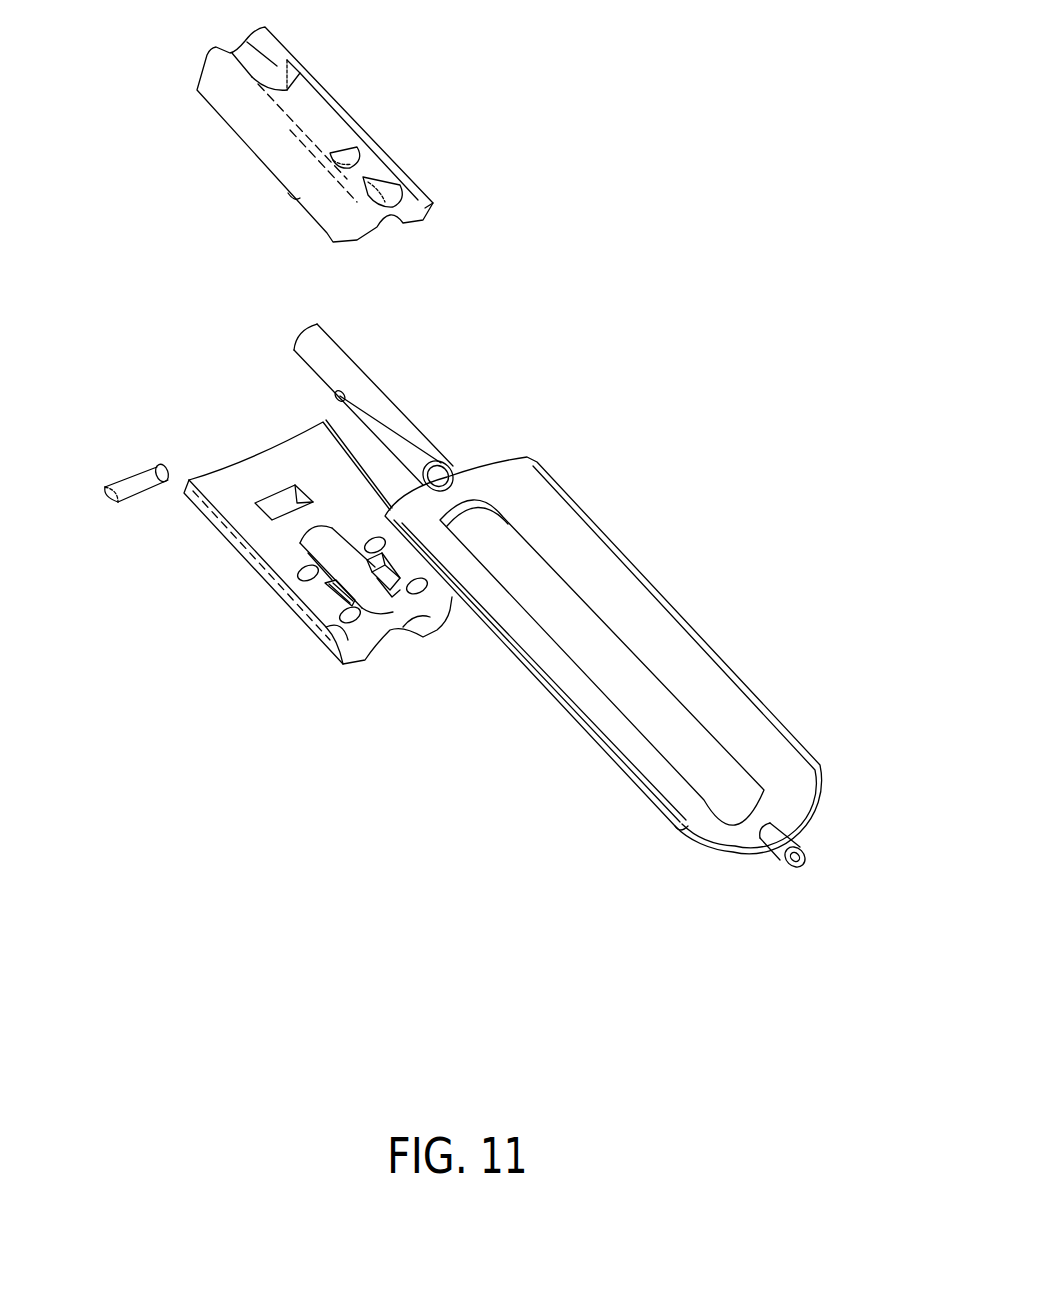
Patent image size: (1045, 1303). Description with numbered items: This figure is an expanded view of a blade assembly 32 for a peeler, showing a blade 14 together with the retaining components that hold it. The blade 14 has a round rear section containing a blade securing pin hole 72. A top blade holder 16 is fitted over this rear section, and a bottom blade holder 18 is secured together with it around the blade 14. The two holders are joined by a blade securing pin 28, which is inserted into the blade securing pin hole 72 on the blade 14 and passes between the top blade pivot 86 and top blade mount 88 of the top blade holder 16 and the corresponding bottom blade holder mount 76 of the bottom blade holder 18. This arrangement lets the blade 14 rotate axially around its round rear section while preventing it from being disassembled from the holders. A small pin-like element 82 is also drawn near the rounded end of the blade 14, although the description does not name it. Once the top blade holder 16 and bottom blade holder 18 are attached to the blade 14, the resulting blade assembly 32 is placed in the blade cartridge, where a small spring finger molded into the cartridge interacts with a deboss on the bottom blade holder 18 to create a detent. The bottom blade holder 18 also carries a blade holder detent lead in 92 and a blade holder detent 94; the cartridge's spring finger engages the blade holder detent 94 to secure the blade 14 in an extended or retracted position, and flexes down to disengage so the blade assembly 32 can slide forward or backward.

The blade 14 is at (610, 626).
The top blade holder 16 is at (318, 501).
The bottom blade holder 18 is at (234, 134).
The blade securing pin 28 is at (119, 415).
The blade assembly 32 is at (349, 853).
The blade securing pin hole 72 is at (417, 395).
The bottom blade holder mount 76 is at (198, 216).
The pivot pin 82 is at (854, 875).
The top blade pivot 86 is at (222, 612).
The top blade mount 88 is at (447, 661).
The blade holder detent lead in 92 is at (444, 156).
The blade holder detent 94 is at (396, 99).